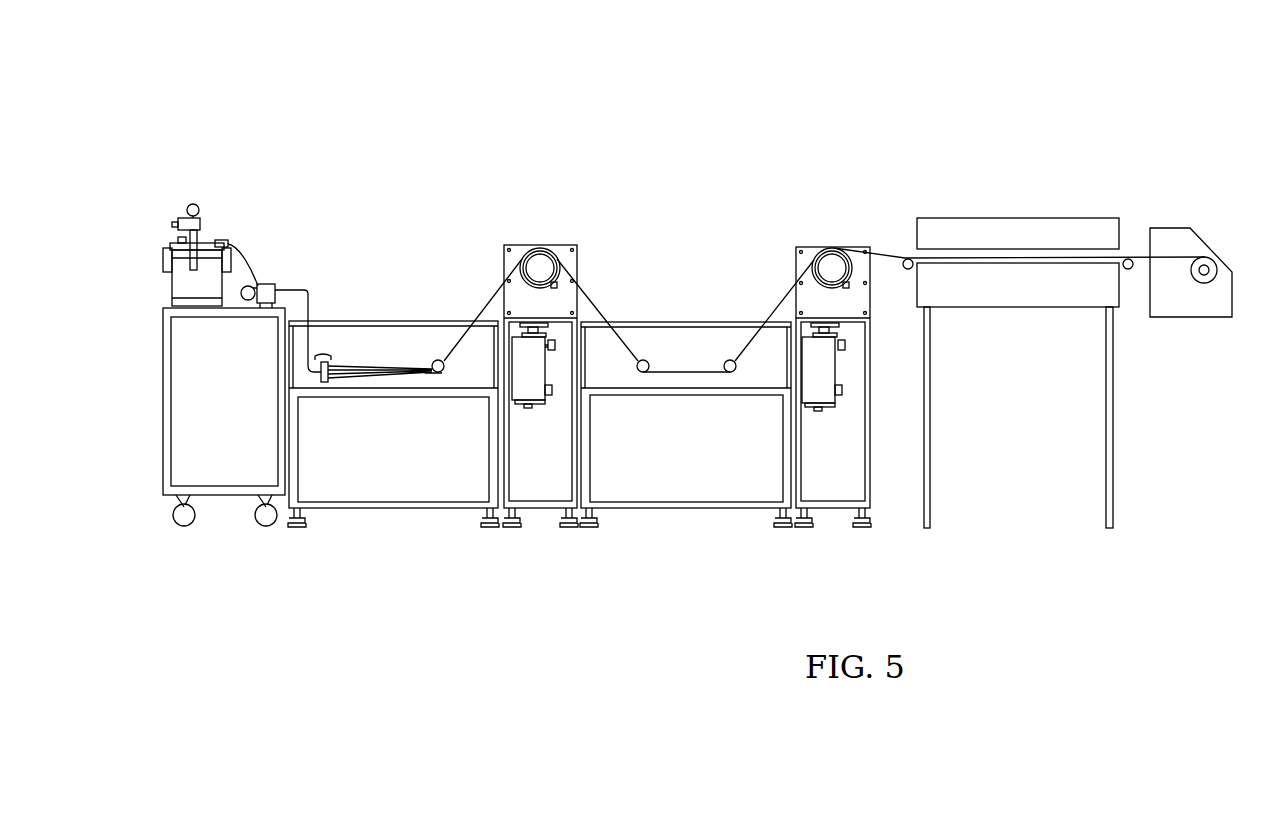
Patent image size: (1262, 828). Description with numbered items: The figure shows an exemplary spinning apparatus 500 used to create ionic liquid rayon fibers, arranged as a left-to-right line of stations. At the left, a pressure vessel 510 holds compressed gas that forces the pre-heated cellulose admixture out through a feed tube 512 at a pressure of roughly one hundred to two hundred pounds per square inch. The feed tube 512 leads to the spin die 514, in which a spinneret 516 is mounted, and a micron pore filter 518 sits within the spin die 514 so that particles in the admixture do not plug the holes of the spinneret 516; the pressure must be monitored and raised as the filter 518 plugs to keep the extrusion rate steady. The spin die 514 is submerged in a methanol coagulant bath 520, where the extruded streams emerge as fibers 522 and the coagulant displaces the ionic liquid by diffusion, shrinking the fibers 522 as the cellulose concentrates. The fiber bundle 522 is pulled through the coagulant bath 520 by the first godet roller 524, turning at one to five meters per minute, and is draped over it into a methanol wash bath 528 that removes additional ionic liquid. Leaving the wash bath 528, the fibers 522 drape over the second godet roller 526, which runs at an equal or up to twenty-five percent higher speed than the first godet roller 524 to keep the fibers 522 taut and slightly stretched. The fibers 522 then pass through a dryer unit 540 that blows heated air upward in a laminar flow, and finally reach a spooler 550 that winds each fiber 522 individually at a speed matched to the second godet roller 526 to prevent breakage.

The spinning apparatus 500 is at (393, 88).
The pressure vessel 510 is at (208, 246).
The feed tube 512 is at (300, 286).
The spin die 514 is at (329, 352).
The spinneret 516 is at (327, 385).
The micron pore filter 518 is at (319, 385).
The coagulant bath 520 is at (414, 364).
The fibers 522 is at (490, 312).
The first godet roller 524 is at (540, 262).
The second godet roller 526 is at (832, 262).
The methanol wash bath 528 is at (701, 364).
The dryer unit 540 is at (1003, 218).
The spooler 550 is at (1170, 228).